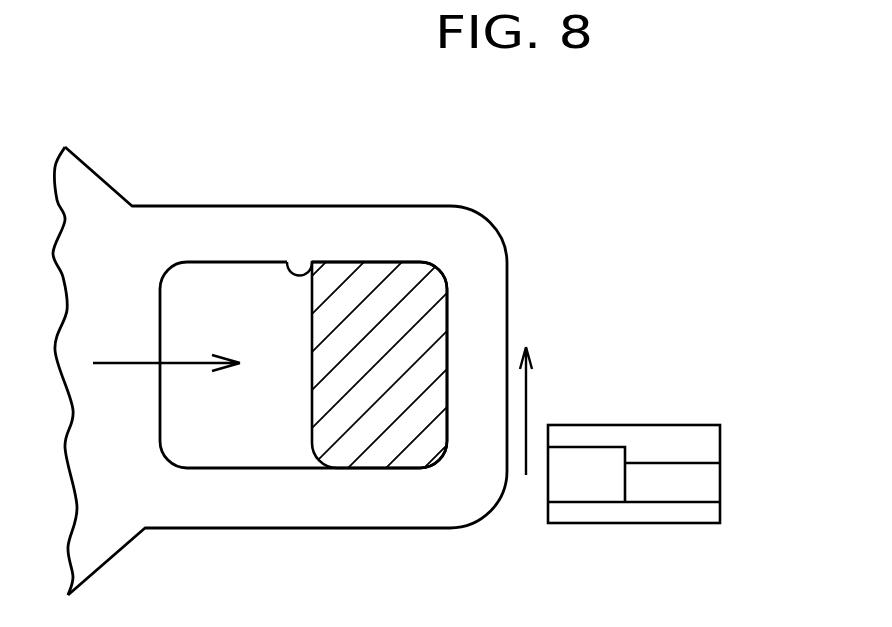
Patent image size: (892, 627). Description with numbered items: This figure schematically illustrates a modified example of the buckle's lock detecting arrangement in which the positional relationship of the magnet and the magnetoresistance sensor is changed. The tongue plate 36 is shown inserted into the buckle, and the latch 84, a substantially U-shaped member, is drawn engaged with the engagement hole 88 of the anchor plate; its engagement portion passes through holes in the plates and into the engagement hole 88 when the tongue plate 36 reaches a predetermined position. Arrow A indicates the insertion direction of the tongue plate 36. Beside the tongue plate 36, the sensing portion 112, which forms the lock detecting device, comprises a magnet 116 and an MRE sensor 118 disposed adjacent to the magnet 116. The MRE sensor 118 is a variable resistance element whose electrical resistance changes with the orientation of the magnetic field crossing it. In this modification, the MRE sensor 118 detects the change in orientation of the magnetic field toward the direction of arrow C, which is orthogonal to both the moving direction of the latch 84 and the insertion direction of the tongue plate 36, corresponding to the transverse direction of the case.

The tongue plate 36 is at (383, 205).
The engagement hole 88 is at (313, 262).
The latch 84 is at (438, 360).
The flow direction arrow A is at (128, 363).
The arrow C is at (528, 462).
The sensing portion 112 is at (653, 423).
The MRE sensor 118 is at (587, 458).
The magnet 116 is at (670, 485).